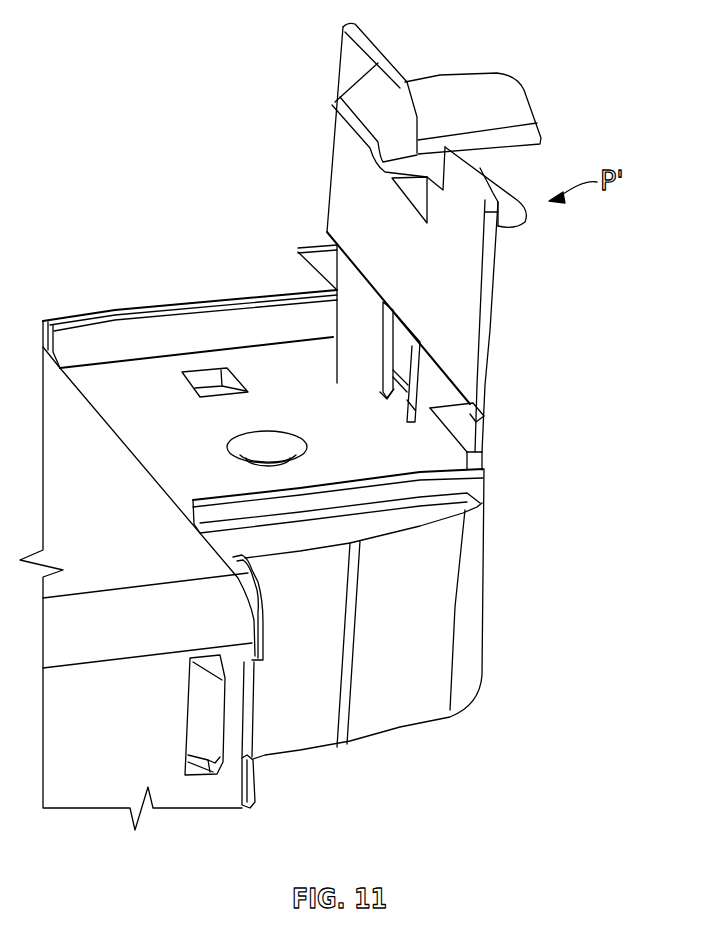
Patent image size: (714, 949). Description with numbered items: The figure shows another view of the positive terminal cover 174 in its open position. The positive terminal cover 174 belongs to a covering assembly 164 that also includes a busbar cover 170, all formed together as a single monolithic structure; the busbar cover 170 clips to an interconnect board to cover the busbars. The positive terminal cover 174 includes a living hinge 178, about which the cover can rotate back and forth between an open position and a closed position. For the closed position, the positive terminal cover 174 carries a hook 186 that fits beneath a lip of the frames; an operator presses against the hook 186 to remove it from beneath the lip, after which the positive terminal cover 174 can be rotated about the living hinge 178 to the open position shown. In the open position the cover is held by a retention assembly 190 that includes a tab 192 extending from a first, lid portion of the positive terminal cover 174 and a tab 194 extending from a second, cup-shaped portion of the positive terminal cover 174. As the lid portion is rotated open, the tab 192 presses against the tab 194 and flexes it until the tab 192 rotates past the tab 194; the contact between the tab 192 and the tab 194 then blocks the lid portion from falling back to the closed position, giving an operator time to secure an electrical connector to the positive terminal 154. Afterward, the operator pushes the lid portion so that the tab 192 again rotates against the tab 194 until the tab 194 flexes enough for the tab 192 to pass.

The positive terminal 154 is at (143, 383).
The covering assembly 164 is at (251, 806).
The busbar cover 170 is at (256, 767).
The positive terminal cover 174 is at (487, 310).
The living hinge 178 is at (452, 397).
The hook 186 is at (406, 81).
The retention assembly 190 is at (354, 317).
The tab 192 is at (392, 338).
The tab 194 is at (393, 393).